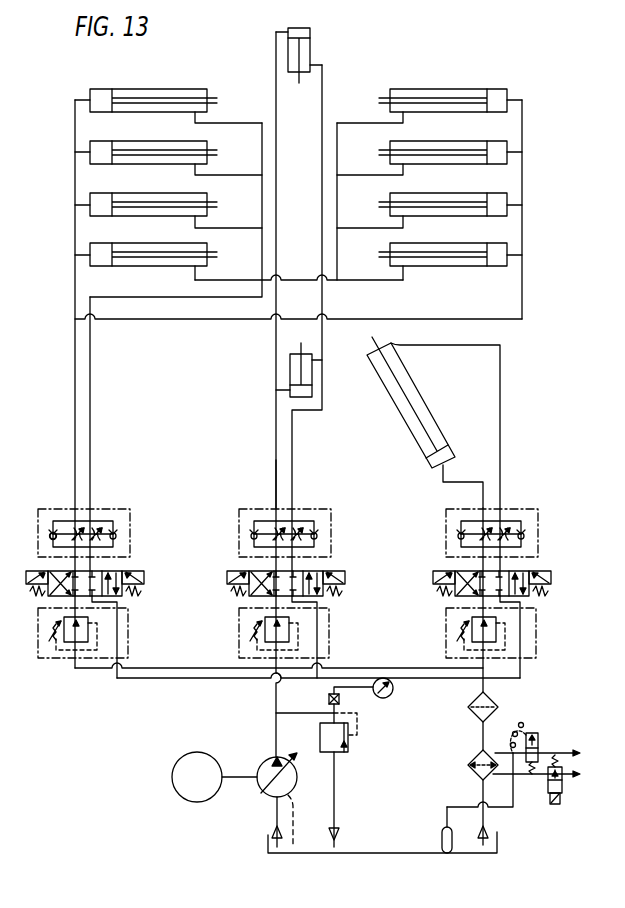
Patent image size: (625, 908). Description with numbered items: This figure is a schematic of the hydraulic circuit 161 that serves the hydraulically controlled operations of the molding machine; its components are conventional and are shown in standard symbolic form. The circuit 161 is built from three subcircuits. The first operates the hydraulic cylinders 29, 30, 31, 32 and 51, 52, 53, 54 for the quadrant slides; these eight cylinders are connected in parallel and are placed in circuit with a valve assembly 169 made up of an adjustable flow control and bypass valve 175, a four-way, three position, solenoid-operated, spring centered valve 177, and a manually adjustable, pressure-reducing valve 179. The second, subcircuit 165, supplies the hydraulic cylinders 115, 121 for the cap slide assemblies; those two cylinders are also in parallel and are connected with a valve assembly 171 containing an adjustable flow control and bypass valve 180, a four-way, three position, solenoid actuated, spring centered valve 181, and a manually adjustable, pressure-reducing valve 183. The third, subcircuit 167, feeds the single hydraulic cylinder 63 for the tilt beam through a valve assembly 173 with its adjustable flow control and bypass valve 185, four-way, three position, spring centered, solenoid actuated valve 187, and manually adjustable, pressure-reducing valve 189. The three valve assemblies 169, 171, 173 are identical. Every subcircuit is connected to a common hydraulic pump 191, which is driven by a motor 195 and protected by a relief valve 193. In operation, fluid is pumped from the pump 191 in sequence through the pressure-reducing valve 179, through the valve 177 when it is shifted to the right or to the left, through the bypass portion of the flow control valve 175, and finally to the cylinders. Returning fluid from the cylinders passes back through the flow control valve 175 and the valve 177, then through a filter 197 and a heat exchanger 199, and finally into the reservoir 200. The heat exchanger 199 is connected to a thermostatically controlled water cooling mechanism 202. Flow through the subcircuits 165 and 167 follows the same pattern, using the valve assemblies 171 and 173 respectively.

The hydraulic cylinder 29 is at (463, 89).
The hydraulic cylinder 30 is at (459, 141).
The hydraulic cylinder 31 is at (454, 178).
The hydraulic cylinder 32 is at (454, 228).
The hydraulic cylinder 51 is at (146, 89).
The hydraulic cylinder 52 is at (140, 142).
The hydraulic cylinder 53 is at (137, 194).
The hydraulic cylinder 54 is at (134, 244).
The hydraulic cylinder 63 is at (398, 410).
The hydraulic cylinder 115 is at (290, 367).
The hydraulic cylinder 121 is at (311, 45).
The hydraulic circuit 161 is at (385, 72).
The subcircuit 165 is at (276, 400).
The subcircuit 167 is at (501, 379).
The valve assembly 169 is at (135, 516).
The valve assembly 171 is at (234, 529).
The valve assembly 173 is at (441, 537).
The adjustable flow control and bypass valve 175 is at (61, 525).
The four-way, three position, solenoid-operated, spring centered valve 177 is at (144, 578).
The four-way, three position, solenoid actuated, spring centered valve 181 is at (226, 574).
The four-way, three position, spring centered, solenoid actuated valve 187 is at (549, 575).
The manually adjustable, pressure-reducing valve 179 is at (70, 643).
The manually adjustable, pressure-reducing valve 183 is at (272, 641).
The manually adjustable, pressure-reducing valve 189 is at (493, 642).
The adjustable flow control and bypass valve 180 is at (264, 518).
The adjustable flow control and bypass valve 185 is at (469, 521).
The hydraulic pump 191 is at (295, 785).
The relief valve 193 is at (349, 745).
The motor 195 is at (213, 754).
The filter 197 is at (475, 700).
The heat exchanger 199 is at (475, 758).
The reservoir 200 is at (501, 845).
The thermostatically controlled water cooling mechanism 202 is at (551, 716).